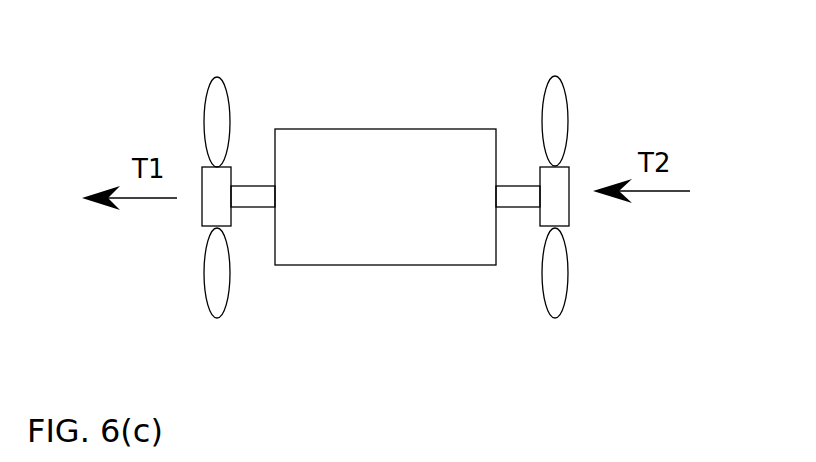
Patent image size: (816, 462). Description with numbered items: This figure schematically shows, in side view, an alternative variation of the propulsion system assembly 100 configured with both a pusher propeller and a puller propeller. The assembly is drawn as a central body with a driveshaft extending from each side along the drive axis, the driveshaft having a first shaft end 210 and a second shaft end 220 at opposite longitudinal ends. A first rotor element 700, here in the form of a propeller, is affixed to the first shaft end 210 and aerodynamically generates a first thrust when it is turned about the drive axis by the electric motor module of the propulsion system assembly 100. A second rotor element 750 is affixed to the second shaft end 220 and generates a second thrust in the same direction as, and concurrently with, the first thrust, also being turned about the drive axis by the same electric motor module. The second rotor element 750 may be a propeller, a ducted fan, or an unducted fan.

The propulsion system assembly 100 is at (402, 117).
The first shaft end 210 is at (253, 196).
The second shaft end 220 is at (520, 209).
The first rotor element 700 is at (240, 83).
The second rotor element 750 is at (584, 108).